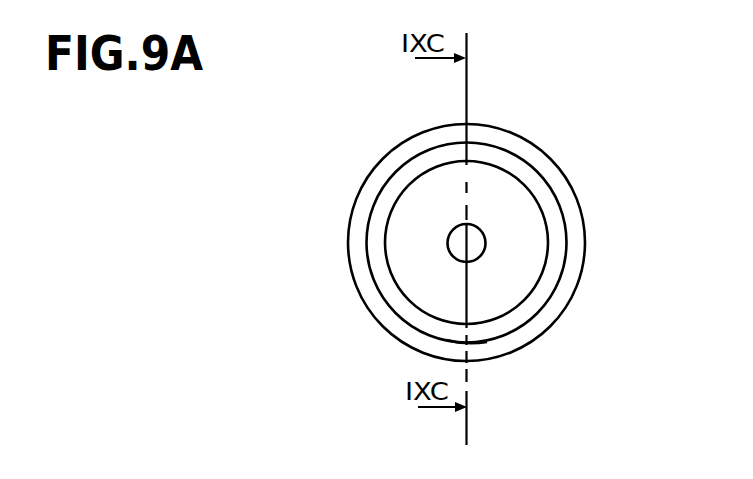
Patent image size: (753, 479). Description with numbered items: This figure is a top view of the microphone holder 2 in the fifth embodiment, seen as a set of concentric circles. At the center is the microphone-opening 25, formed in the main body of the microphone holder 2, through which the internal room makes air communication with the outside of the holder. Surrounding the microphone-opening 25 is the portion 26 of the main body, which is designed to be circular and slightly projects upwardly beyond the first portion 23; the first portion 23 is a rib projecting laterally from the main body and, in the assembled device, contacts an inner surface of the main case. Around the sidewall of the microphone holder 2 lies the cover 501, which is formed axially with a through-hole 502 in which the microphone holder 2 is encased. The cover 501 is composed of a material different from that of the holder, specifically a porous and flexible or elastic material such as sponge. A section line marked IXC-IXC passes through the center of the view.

The microphone holder 2 is at (505, 261).
The first portion 23 is at (553, 272).
The microphone-opening 25 is at (478, 259).
The portion 26 is at (490, 187).
The cover 501 is at (552, 161).
The through-hole 502 is at (486, 340).